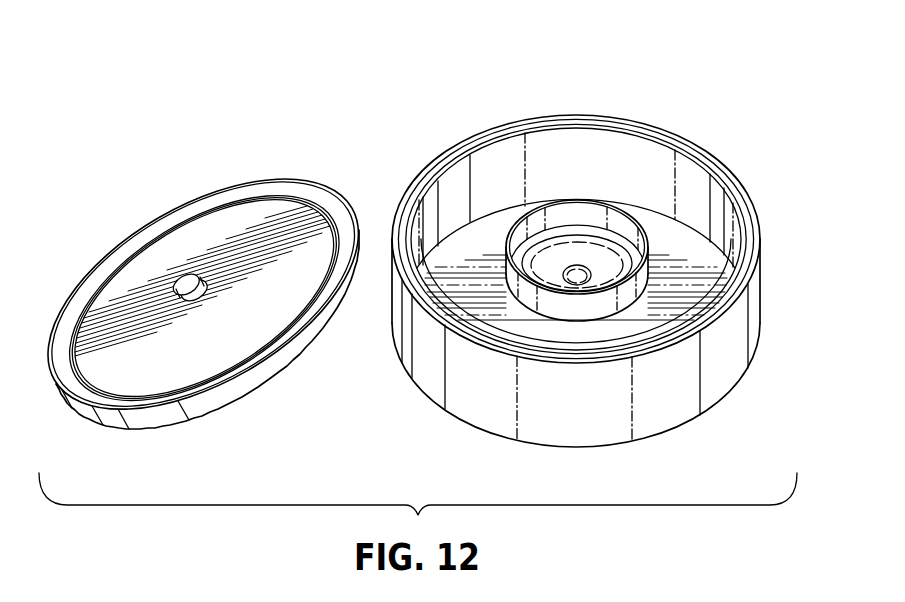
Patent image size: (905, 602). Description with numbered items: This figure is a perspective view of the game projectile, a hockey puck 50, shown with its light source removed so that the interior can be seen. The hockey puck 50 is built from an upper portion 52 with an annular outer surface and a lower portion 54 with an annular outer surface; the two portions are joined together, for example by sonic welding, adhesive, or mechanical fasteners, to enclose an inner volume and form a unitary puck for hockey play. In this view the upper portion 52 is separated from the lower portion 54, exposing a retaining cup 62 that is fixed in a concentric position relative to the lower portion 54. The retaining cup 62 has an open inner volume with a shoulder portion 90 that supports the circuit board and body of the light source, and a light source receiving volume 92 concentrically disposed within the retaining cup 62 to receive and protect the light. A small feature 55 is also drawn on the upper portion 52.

The hockey puck 50 is at (371, 92).
The upper portion 52 is at (189, 350).
The lower portion 54 is at (612, 338).
The knob 55 is at (184, 283).
The retaining cup 62 is at (633, 217).
The shoulder portion 90 is at (583, 210).
The light source receiving volume 92 is at (577, 277).